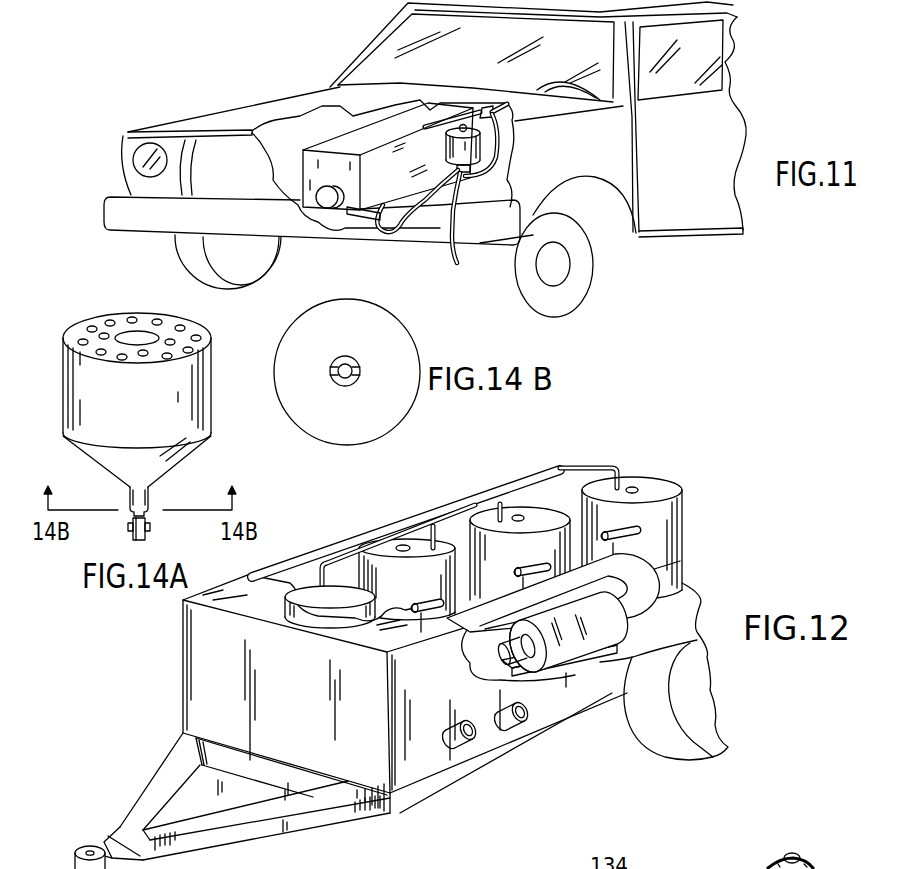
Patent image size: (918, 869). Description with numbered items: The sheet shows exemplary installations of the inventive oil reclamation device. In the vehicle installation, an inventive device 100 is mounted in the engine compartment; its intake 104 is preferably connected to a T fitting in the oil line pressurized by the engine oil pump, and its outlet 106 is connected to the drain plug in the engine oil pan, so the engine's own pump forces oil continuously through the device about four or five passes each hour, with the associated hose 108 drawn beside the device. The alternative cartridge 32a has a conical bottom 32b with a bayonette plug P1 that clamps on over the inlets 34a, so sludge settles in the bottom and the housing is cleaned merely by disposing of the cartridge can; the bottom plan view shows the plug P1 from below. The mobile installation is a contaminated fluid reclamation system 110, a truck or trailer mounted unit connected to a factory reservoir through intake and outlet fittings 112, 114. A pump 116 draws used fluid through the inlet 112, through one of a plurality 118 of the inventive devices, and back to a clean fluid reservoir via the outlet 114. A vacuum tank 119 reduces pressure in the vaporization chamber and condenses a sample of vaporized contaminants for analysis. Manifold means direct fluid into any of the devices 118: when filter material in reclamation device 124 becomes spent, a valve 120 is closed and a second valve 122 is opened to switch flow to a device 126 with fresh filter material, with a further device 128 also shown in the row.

In FIG. 11, the reclamation device 100 is at (482, 152).
In FIG. 11, the intake 104 is at (457, 263).
In FIG. 11, the outlet 106 is at (377, 127).
In FIG. 11, the hose 108 is at (397, 233).
In FIG. 14A, the cartridge 32a is at (160, 413).
In FIG. 14A, the conical bottom 32b is at (162, 455).
In FIG. 14A, the bayonette plug P1 is at (148, 494).
In FIG. 14B, the bayonette plug P1 is at (350, 356).
In FIG. 14A, the inlets 34a is at (148, 535).
In FIG. 12, the contaminated fluid reclamation system 110 is at (177, 688).
In FIG. 12, the intake fitting 112 is at (478, 740).
In FIG. 12, the outlet fitting 114 is at (528, 720).
In FIG. 12, the pump 116 is at (600, 675).
In FIG. 12, the plurality of inventive devices 118 is at (539, 516).
In FIG. 12, the vacuum tank 119 is at (345, 595).
In FIG. 12, the valve 120 is at (647, 552).
In FIG. 12, the second valve 122 is at (537, 537).
In FIG. 12, the reclamation device 124 is at (657, 487).
In FIG. 12, the device 126 is at (490, 515).
In FIG. 12, the cylinder 128 is at (397, 550).